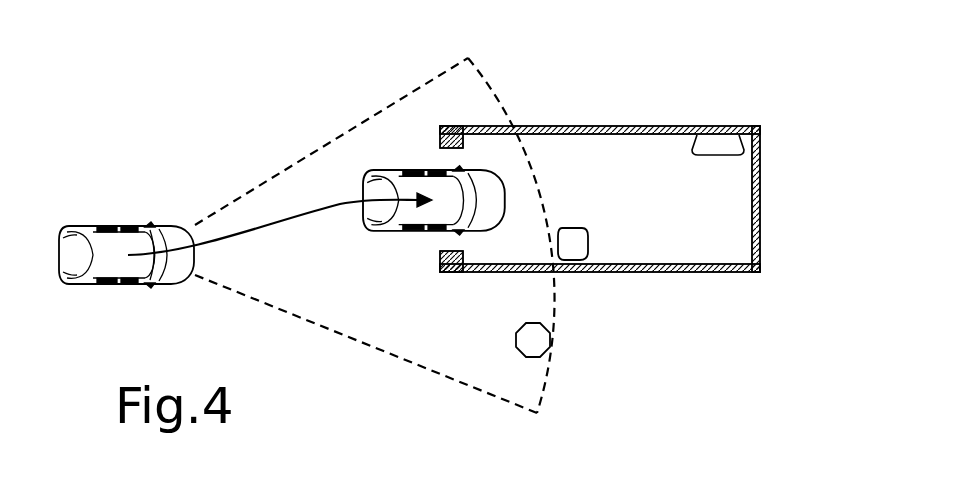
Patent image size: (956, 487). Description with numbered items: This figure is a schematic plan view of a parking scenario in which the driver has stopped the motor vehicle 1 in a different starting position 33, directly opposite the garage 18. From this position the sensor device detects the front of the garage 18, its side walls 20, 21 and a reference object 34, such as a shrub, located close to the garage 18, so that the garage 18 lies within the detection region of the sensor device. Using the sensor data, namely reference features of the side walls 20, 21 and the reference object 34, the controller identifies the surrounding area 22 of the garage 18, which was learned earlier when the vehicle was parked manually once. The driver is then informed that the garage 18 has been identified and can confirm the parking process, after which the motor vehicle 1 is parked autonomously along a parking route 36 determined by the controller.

The motor vehicle 1 is at (147, 226).
The garage 18 is at (634, 192).
The side wall 20 is at (471, 280).
The side wall 21 is at (535, 126).
The surrounding area 22 is at (728, 323).
The starting position 33 is at (88, 216).
The reference object 34 is at (550, 342).
The parking route 36 is at (292, 218).